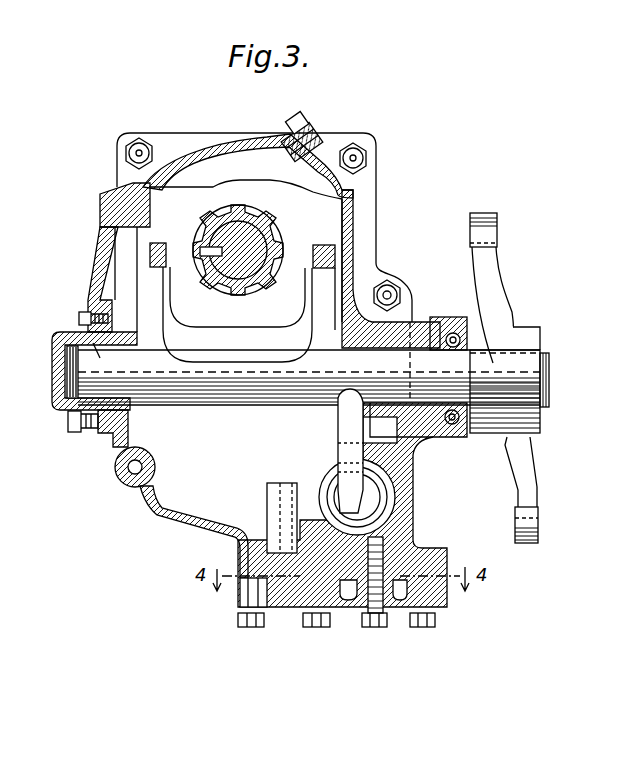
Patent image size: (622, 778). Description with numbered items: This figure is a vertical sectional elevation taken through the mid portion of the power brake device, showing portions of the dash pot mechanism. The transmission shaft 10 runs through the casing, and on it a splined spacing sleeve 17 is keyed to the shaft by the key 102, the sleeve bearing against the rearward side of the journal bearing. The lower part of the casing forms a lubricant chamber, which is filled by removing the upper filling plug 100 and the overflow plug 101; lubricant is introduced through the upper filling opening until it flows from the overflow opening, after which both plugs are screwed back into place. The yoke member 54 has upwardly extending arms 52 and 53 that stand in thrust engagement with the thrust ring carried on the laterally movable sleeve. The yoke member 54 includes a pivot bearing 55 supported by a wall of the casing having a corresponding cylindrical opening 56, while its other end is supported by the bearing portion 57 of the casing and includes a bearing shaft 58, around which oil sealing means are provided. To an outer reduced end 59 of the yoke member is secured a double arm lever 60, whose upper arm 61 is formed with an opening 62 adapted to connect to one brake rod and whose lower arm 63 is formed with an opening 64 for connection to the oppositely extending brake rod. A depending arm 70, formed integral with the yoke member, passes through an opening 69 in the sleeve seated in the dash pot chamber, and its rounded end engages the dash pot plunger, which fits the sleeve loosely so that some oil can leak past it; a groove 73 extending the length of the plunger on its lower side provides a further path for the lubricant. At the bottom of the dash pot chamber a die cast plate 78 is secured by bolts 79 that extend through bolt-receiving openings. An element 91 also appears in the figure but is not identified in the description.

The transmission shaft 10 is at (262, 268).
The splined spacing sleeve 17 is at (268, 226).
The upwardly extending arm 52 is at (148, 283).
The upwardly extending arm 53 is at (330, 273).
The yoke member 54 is at (242, 338).
The pivot bearing 55 is at (80, 328).
The cylindrical opening 56 is at (54, 378).
The bearing portion 57 is at (430, 432).
The bearing shaft 58 is at (423, 342).
The outer reduced end 59 is at (549, 379).
The double arm lever 60 is at (538, 424).
The upper arm 61 is at (496, 290).
The opening 62 is at (492, 237).
The lower arm 63 is at (530, 492).
The opening 64 is at (538, 525).
The opening 69 is at (324, 478).
The depending arm 70 is at (337, 425).
The groove 73 is at (414, 507).
The die cast plate 78 is at (355, 617).
The bolts 79 is at (410, 622).
The bearing 91 is at (456, 330).
The upper filling plug 100 is at (345, 112).
The overflow plug 101 is at (88, 328).
The key 102 is at (205, 251).